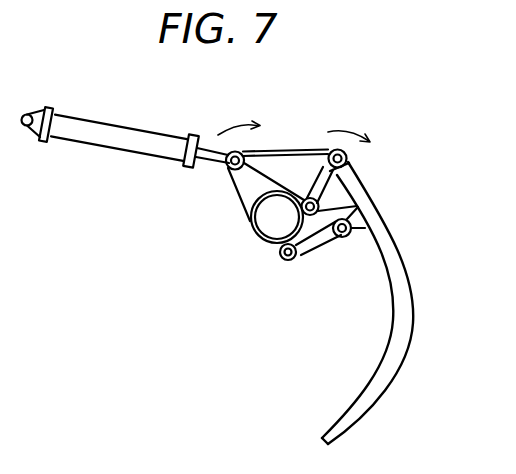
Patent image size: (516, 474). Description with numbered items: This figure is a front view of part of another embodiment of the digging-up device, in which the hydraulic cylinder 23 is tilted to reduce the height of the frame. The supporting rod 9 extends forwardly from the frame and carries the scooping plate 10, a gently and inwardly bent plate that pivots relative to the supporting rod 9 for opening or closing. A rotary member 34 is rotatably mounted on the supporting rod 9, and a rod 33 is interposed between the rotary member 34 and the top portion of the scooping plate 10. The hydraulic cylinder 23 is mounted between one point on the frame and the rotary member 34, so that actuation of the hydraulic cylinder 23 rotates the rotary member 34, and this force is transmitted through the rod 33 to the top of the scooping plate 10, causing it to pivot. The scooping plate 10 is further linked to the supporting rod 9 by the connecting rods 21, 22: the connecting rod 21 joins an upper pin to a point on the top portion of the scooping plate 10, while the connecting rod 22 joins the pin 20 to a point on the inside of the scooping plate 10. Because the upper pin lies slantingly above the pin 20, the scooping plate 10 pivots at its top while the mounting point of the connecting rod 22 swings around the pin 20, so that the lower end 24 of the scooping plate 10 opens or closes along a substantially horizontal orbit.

The hydraulic cylinder 23 is at (117, 133).
The rotary member 34 is at (240, 178).
The rod 33 is at (282, 152).
The connecting rod 21 is at (323, 190).
The supporting rod 9 is at (263, 222).
The pin 20 is at (280, 261).
The connecting rod 22 is at (315, 242).
The scooping plate 10 is at (414, 323).
The lower end 24 is at (321, 444).